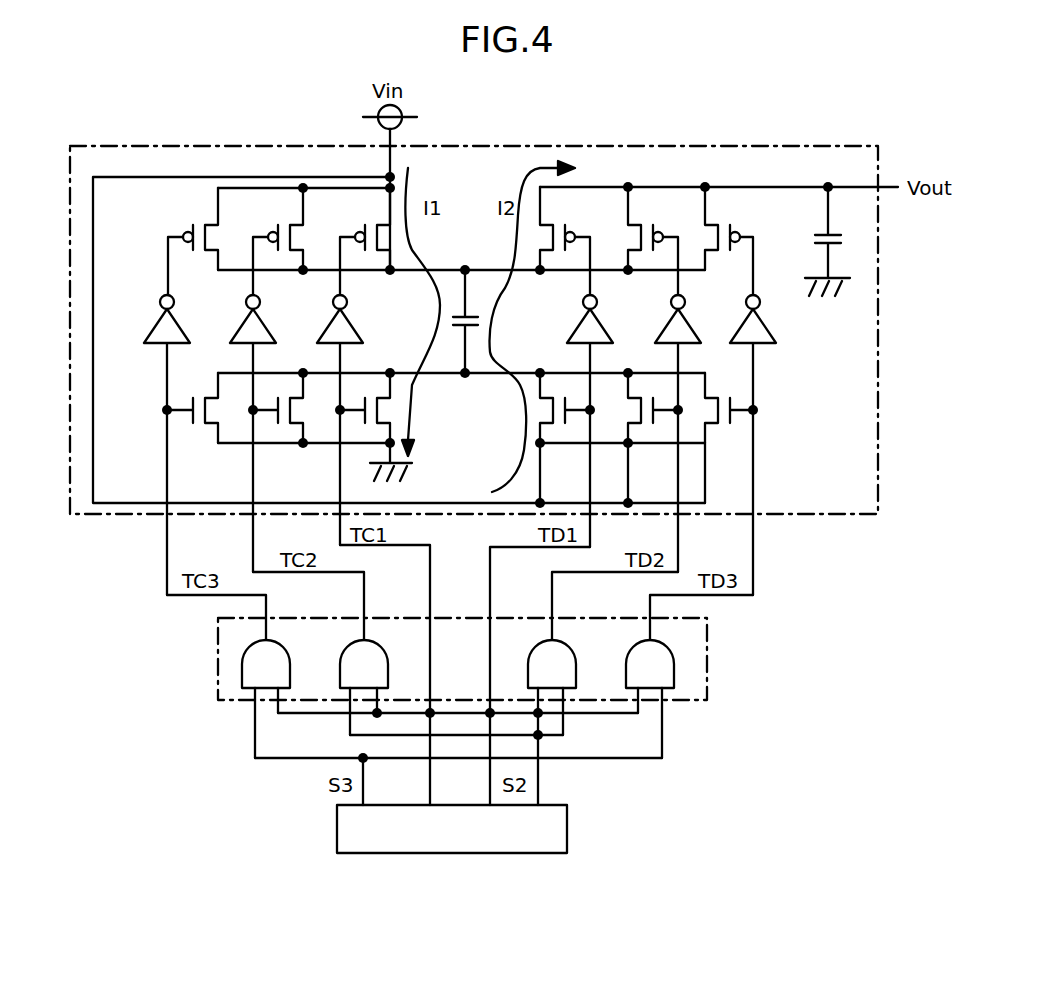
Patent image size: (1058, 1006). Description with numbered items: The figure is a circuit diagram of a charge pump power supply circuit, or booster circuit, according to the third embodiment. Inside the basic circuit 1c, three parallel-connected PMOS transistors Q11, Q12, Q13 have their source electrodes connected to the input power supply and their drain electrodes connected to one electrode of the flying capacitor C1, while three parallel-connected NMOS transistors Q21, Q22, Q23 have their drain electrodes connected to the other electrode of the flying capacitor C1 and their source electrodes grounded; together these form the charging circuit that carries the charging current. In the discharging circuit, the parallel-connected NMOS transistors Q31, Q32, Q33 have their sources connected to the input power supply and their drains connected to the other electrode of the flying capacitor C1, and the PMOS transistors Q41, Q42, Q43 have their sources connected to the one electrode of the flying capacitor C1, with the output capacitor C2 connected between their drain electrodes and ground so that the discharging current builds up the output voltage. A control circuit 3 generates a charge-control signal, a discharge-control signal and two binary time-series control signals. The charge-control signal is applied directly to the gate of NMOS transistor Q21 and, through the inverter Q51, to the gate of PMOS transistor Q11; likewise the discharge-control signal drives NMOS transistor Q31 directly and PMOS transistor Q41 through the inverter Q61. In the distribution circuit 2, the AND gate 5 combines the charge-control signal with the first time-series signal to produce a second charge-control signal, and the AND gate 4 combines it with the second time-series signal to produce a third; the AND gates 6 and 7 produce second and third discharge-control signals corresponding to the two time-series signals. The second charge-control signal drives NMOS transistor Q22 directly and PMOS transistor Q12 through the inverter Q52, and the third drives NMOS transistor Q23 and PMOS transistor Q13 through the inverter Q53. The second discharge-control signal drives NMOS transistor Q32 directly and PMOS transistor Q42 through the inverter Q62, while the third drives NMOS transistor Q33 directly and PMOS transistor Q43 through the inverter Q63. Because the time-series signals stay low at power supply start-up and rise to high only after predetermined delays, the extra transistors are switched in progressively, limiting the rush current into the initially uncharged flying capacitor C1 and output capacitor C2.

The basic circuit 1c is at (562, 145).
The distribution circuit 2 is at (482, 711).
The control circuit 3 is at (567, 828).
The AND gate 4 is at (284, 650).
The AND gate 5 is at (382, 650).
The AND gate 6 is at (570, 650).
The AND gate 7 is at (668, 650).
The PMOS transistor Q11 is at (361, 241).
The PMOS transistor Q12 is at (273, 241).
The PMOS transistor Q13 is at (186, 241).
The NMOS transistor Q21 is at (387, 427).
The NMOS transistor Q22 is at (284, 430).
The NMOS transistor Q23 is at (192, 420).
The NMOS transistor Q31 is at (543, 408).
The NMOS transistor Q32 is at (653, 414).
The NMOS transistor Q33 is at (729, 414).
The PMOS transistor Q41 is at (565, 241).
The PMOS transistor Q42 is at (653, 241).
The PMOS transistor Q43 is at (729, 241).
The inverter Q51 is at (325, 419).
The inverter Q52 is at (237, 432).
The inverter Q53 is at (149, 444).
The inverter Q61 is at (574, 421).
The inverter Q62 is at (660, 433).
The inverter Q63 is at (737, 445).
The flying capacitor C1 is at (448, 321).
The output capacitor C2 is at (816, 241).